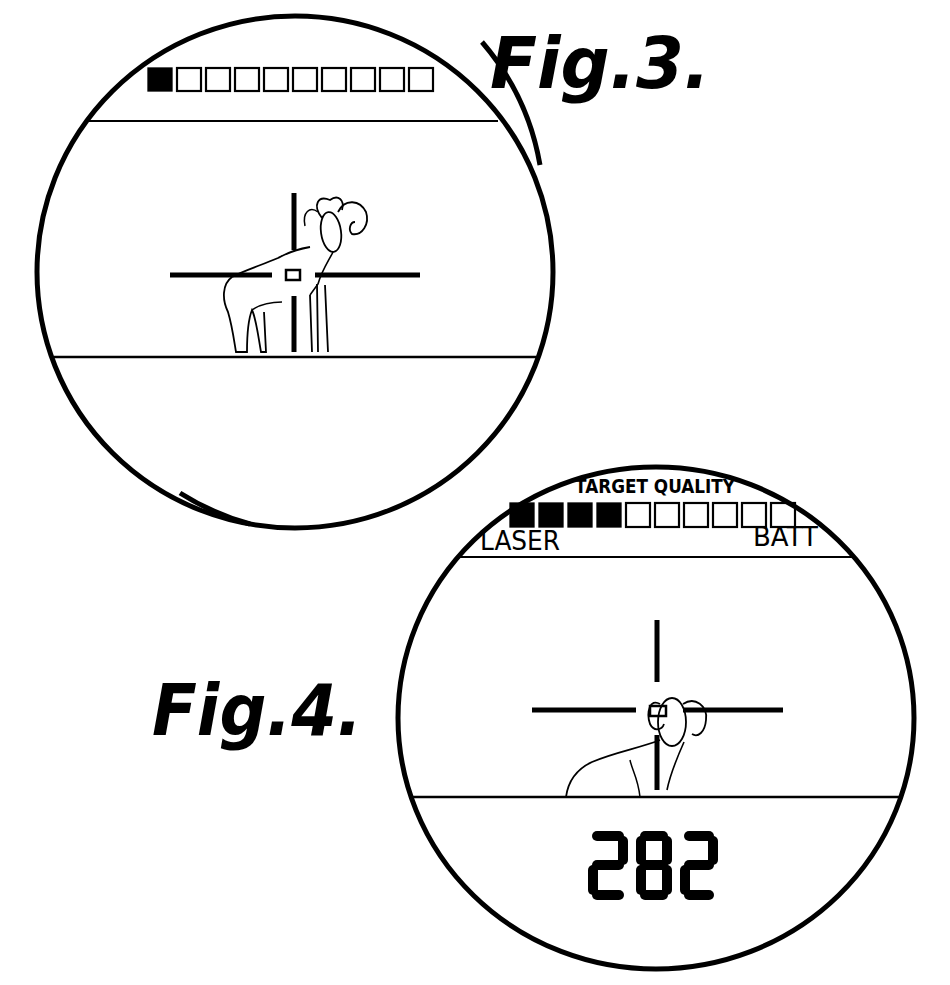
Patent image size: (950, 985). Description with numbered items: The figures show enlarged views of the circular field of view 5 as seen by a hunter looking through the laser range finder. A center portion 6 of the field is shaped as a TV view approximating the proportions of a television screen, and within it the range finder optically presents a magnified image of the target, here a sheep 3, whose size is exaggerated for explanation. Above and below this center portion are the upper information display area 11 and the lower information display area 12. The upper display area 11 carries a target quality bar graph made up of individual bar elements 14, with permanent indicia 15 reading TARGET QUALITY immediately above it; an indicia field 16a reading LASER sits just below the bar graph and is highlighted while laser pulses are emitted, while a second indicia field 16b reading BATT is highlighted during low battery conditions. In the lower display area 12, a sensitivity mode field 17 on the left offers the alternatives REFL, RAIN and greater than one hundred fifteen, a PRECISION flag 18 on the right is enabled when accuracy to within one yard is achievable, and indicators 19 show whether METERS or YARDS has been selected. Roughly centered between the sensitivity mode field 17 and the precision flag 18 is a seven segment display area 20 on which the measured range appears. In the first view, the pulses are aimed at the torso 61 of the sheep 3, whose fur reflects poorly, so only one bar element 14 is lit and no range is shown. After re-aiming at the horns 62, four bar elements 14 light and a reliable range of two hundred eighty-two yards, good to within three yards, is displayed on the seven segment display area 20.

In FIG. 3, the sheep 3 is at (284, 271).
In FIG. 3, the circular field of view 5 is at (556, 192).
In FIG. 3, the center portion 6 is at (288, 282).
In FIG. 3, the upper information display area 11 is at (396, 52).
In FIG. 3, the lower information display area 12 is at (243, 503).
In FIG. 3, the bar elements 14 is at (272, 92).
In FIG. 3, the permanent indicia 15 is at (213, 42).
In FIG. 3, the indicia field 16a is at (178, 120).
In FIG. 3, the second indicia field 16b is at (438, 118).
In FIG. 3, the sensitivity mode field 17 is at (160, 456).
In FIG. 4, the sensitivity mode field 17 is at (546, 863).
In FIG. 3, the PRECISION flag 18 is at (476, 373).
In FIG. 3, the measurement unit indicators 19 is at (440, 458).
In FIG. 4, the measurement unit indicators 19 is at (763, 891).
In FIG. 3, the seven segment display area 20 is at (308, 400).
In FIG. 4, the seven segment display area 20 is at (672, 830).
In FIG. 3, the torso 61 is at (253, 265).
In FIG. 4, the horns 62 is at (696, 700).